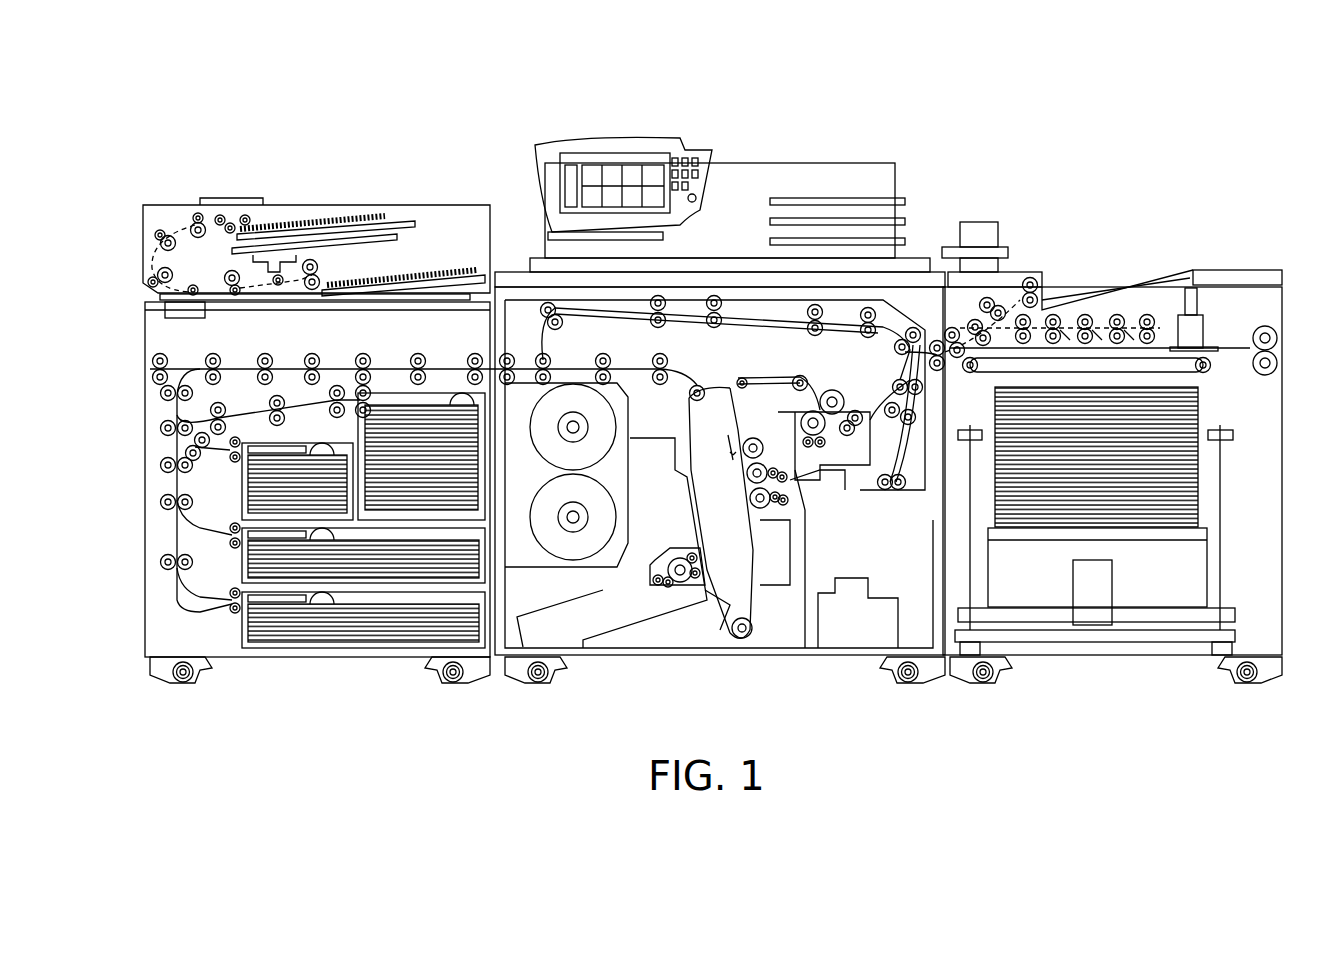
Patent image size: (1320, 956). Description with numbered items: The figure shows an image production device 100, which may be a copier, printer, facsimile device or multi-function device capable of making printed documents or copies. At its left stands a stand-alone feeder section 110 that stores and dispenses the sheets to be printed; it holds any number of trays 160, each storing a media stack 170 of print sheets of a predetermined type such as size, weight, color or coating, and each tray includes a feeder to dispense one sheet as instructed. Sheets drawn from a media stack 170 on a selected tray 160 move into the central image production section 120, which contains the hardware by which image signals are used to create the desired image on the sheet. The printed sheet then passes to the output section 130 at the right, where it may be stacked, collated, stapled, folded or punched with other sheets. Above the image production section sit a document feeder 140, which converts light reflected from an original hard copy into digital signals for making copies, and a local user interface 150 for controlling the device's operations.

The image production device 100 is at (1090, 148).
The feeder section 110 is at (237, 657).
The image production section 120 is at (675, 657).
The output section 130 is at (1105, 657).
The document feeder 140 is at (435, 203).
The local user interface 150 is at (790, 168).
The tray 160 is at (230, 572).
The media stack 170 is at (258, 548).